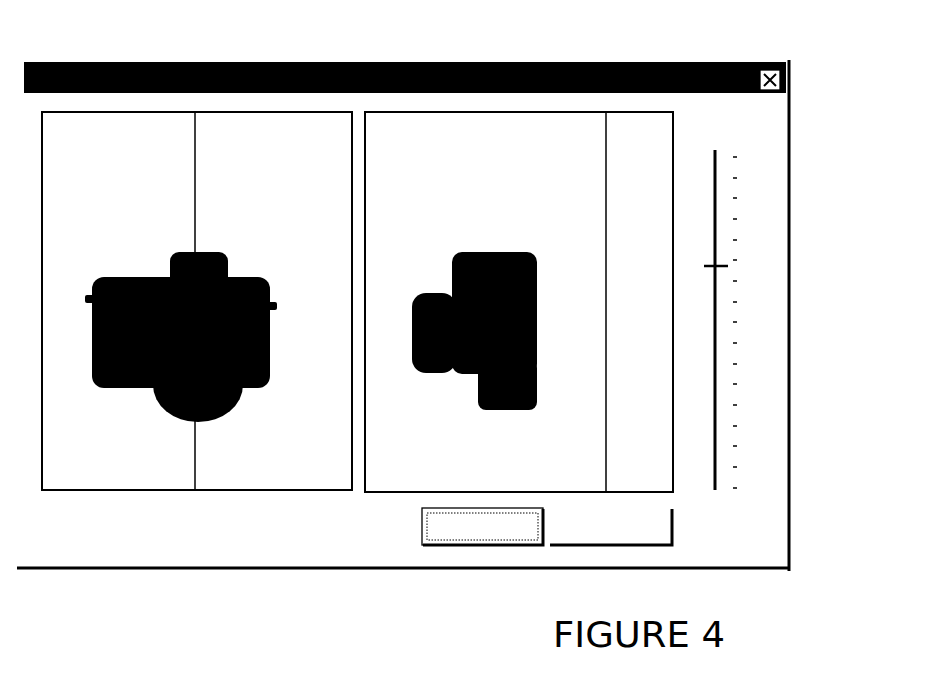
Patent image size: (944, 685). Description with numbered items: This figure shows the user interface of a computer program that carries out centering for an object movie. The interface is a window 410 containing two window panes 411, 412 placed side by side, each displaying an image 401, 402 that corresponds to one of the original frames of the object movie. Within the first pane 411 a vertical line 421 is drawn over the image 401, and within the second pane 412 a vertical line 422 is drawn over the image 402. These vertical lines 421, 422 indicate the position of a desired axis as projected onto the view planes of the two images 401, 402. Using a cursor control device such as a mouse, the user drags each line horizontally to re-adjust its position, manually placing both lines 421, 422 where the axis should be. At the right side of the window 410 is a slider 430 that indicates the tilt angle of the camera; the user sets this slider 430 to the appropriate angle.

The window 410 is at (340, 62).
The window pane 411 is at (110, 480).
The window pane 412 is at (400, 500).
The image 401 is at (232, 275).
The image 402 is at (518, 253).
The vertical line 421 is at (193, 448).
The vertical line 422 is at (605, 442).
The slider 430 is at (727, 265).